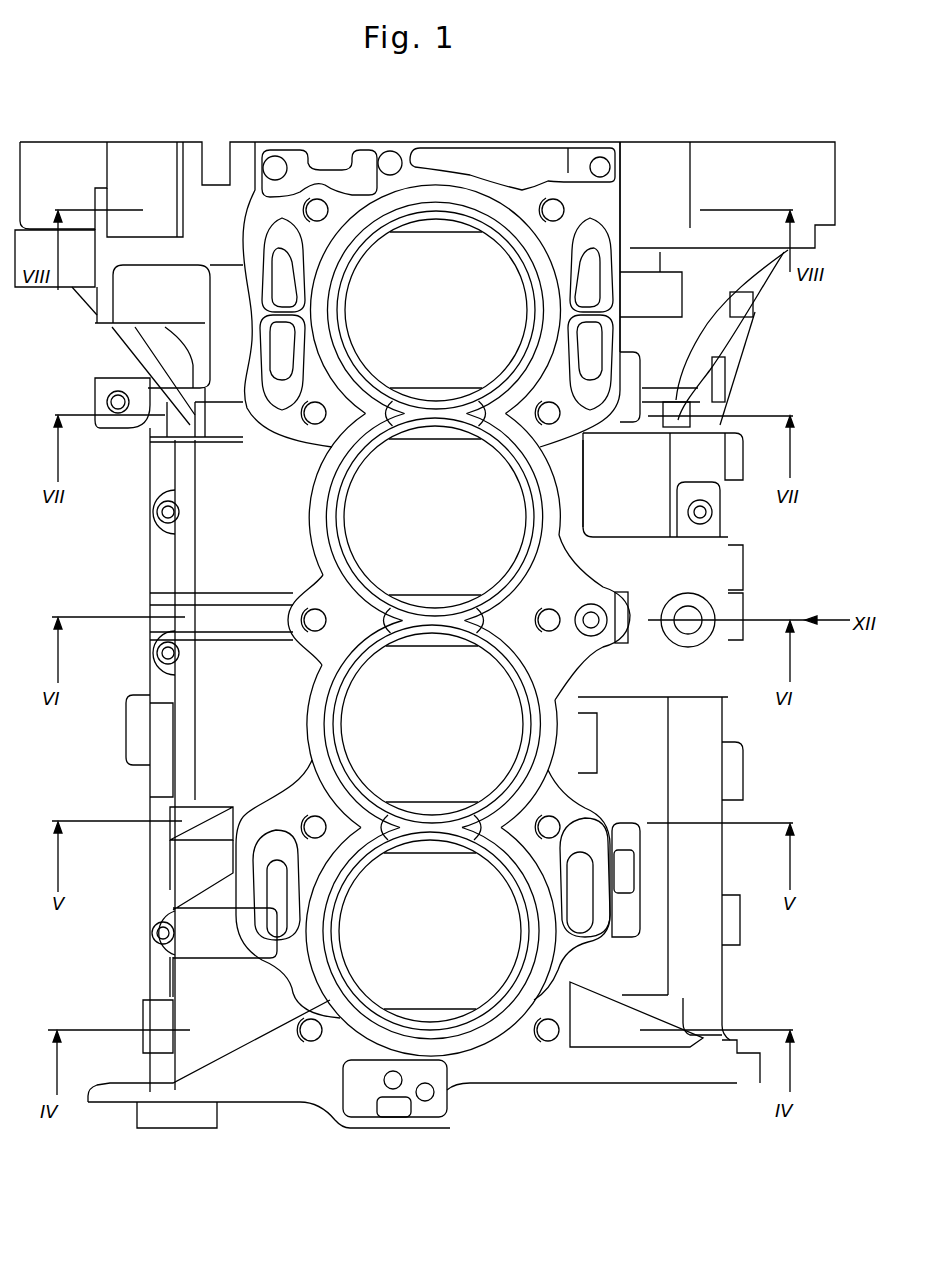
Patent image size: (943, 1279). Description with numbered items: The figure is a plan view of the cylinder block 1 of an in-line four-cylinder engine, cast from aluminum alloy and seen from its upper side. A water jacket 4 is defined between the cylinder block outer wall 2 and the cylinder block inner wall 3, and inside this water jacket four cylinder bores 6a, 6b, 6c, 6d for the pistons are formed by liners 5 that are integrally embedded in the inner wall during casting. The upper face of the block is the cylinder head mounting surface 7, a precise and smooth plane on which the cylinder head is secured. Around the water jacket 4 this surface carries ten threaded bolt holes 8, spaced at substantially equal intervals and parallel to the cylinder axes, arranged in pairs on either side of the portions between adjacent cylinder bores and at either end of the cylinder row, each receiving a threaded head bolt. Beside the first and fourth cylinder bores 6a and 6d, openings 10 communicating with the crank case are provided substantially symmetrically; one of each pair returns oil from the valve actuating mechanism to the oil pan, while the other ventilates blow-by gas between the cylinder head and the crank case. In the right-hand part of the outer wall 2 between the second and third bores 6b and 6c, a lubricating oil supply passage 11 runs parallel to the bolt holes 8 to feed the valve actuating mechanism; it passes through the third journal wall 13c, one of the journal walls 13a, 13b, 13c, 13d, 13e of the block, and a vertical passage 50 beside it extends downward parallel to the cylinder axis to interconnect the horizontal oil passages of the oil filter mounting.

The cylinder block 1 is at (738, 101).
The cylinder block outer wall 2 is at (582, 493).
The cylinder block inner wall 3 is at (536, 547).
The water jacket 4 is at (550, 707).
The liners 5 is at (526, 287).
The first cylinder bore 6a is at (347, 917).
The second cylinder bore 6b is at (357, 704).
The third cylinder bore 6c is at (345, 513).
The fourth cylinder bore 6d is at (370, 378).
The cylinder head mounting surface 7 is at (566, 737).
The threaded bolt holes 8 is at (322, 204).
The openings 10 is at (277, 332).
The lubricating oil supply passage 11 is at (593, 613).
The journal wall 13a is at (424, 1008).
The journal wall 13b is at (428, 801).
The third journal wall 13c is at (452, 594).
The journal wall 13d is at (442, 392).
The journal wall 13e is at (425, 237).
The vertical passage 50 is at (688, 610).